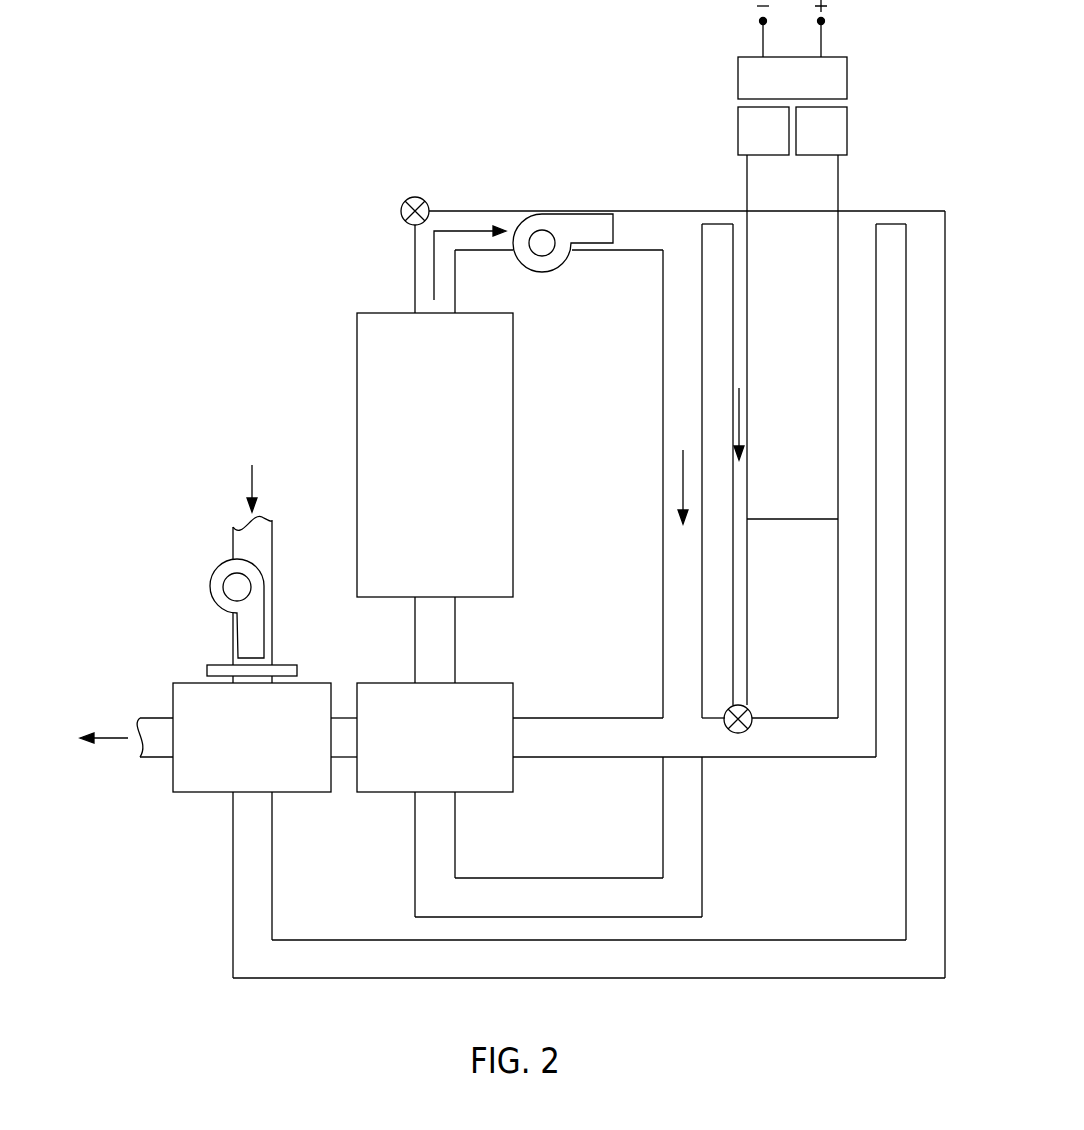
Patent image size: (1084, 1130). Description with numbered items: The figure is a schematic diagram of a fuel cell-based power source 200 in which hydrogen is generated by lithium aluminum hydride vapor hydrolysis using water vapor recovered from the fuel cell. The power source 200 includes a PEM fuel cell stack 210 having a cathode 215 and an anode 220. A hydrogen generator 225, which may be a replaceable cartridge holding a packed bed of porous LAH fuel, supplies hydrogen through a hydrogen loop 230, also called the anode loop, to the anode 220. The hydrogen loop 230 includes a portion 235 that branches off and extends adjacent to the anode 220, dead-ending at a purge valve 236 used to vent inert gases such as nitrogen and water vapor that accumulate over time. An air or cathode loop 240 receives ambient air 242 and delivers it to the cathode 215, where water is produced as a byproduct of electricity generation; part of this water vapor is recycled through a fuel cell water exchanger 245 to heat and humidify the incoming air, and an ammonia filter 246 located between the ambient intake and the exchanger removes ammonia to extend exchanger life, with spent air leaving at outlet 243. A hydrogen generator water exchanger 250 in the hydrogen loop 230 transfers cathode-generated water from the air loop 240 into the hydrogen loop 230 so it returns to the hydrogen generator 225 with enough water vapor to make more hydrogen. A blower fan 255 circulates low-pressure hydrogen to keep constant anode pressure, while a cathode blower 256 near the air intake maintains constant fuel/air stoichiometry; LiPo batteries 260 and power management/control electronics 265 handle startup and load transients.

The fuel cell-based power source 200 is at (226, 76).
The PEM fuel cell stack 210 is at (787, 502).
The cathode 215 is at (838, 222).
The anode 220 is at (749, 222).
The hydrogen generator 225 is at (514, 455).
The hydrogen loop 230 is at (619, 210).
The portion of the hydrogen loop 235 is at (738, 322).
The purge valve 236 is at (751, 711).
The air or cathode loop 240 is at (772, 958).
The ambient air 242 is at (256, 481).
The water outlet 243 is at (112, 737).
The fuel cell water exchanger 245 is at (307, 681).
The ammonia filter 246 is at (222, 663).
The hydrogen generator water exchanger 250 is at (478, 683).
The blower fan 255 is at (550, 273).
The cathode blower 256 is at (208, 584).
The LiPo batteries 260 is at (848, 133).
The power management/control electronics 265 is at (848, 83).